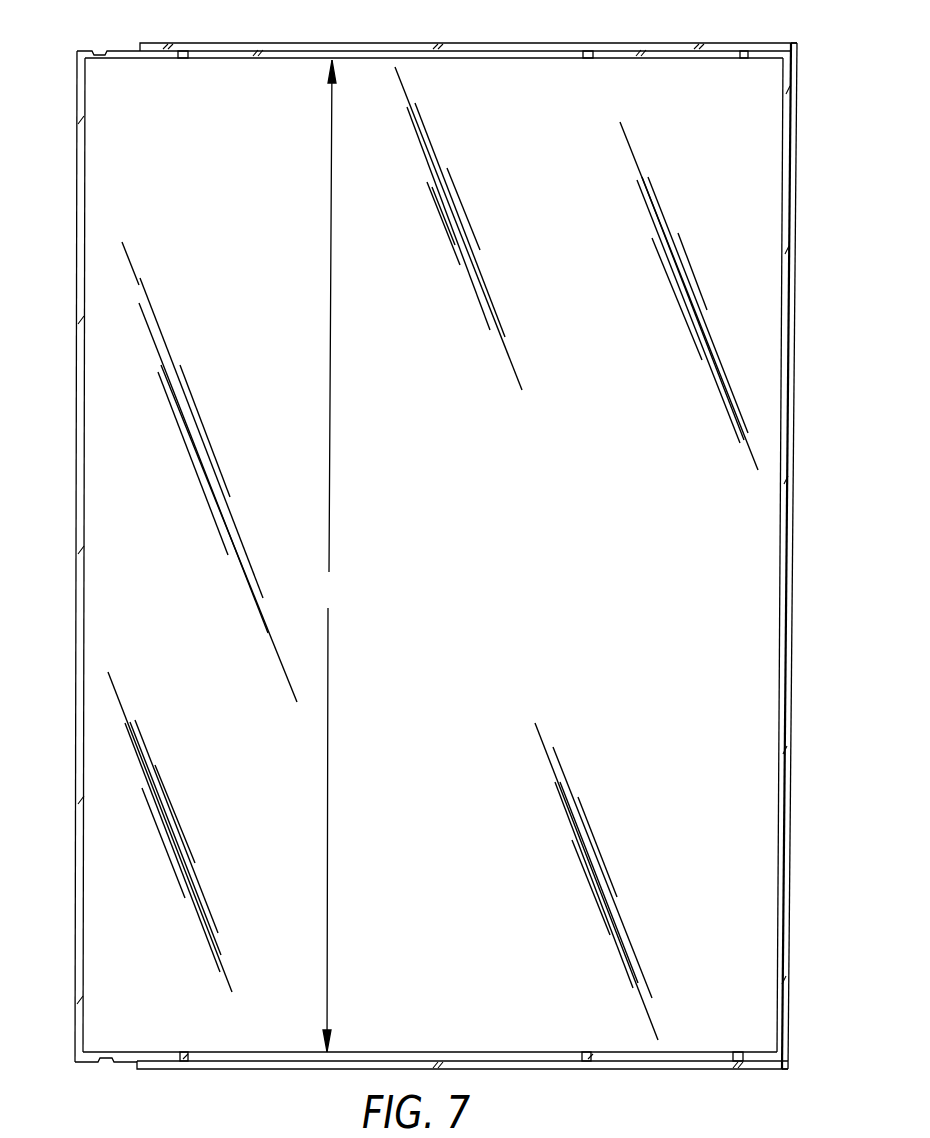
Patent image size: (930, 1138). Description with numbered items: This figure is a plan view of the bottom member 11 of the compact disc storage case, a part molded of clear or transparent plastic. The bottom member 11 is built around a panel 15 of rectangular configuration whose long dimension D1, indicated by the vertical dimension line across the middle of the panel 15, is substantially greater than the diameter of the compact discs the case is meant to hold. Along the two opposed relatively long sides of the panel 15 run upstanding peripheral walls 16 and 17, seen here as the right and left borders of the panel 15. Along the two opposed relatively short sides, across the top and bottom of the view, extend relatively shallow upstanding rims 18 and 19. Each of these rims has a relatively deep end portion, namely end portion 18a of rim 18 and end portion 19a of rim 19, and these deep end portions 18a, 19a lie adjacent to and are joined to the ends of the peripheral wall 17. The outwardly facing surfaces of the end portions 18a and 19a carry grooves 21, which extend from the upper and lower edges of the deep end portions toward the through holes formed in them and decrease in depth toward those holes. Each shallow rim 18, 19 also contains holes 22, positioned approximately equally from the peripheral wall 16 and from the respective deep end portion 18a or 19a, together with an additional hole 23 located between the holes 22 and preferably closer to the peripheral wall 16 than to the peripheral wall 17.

The bottom member 11 is at (437, 564).
The panel 15 is at (607, 673).
The peripheral wall 16 is at (780, 668).
The peripheral wall 17 is at (80, 628).
The rim 18 is at (645, 1056).
The end portion 18a is at (128, 1062).
The rim 19 is at (660, 58).
The end portion 19a is at (128, 52).
The groove 21 is at (99, 52).
The hole 22 is at (184, 62).
The hole 23 is at (590, 62).
The long dimension D1 is at (335, 556).